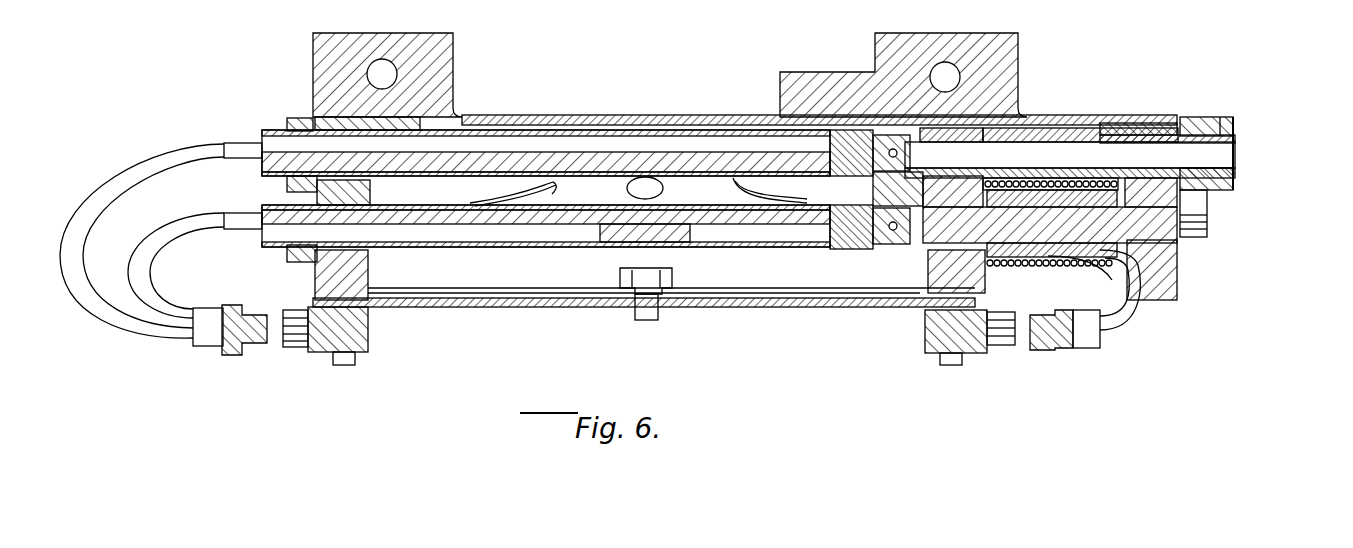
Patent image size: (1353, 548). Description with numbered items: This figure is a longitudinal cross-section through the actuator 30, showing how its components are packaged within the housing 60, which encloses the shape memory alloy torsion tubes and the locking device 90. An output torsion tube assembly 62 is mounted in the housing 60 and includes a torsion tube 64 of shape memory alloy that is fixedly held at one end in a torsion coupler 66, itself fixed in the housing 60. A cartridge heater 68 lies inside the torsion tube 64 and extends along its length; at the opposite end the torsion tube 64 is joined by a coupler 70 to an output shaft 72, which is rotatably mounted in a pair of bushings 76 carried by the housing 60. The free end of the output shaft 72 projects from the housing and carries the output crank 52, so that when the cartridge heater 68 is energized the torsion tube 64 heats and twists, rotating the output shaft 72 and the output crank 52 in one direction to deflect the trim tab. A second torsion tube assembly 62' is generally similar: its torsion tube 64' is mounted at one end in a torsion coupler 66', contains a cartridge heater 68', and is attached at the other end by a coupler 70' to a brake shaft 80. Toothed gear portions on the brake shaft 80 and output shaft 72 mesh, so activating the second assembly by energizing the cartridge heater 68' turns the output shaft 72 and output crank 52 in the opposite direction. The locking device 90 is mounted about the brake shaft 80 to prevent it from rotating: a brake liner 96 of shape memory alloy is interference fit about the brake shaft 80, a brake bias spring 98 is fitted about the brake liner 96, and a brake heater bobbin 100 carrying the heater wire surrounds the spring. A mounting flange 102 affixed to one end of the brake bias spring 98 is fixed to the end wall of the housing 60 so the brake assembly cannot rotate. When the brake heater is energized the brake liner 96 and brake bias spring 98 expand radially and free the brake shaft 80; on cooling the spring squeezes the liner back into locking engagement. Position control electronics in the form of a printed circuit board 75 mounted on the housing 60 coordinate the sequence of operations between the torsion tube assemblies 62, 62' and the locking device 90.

The actuator 30 is at (625, 92).
The output crank 52 is at (1233, 123).
The housing 60 is at (490, 117).
The output torsion tube assembly 62 is at (186, 198).
The second torsion tube assembly 62' is at (222, 284).
The torsion tube 64 is at (546, 120).
The torsion tube 64' is at (546, 247).
The torsion coupler 66 is at (278, 187).
The torsion coupler 66' is at (354, 306).
The cartridge heater 68 is at (638, 136).
The cartridge heater 68' is at (673, 255).
The coupler 70 is at (855, 105).
The coupler 70' is at (844, 247).
The output shaft 72 is at (963, 135).
The printed circuit board 75 is at (487, 307).
The bushings 76 is at (935, 135).
The brake shaft 80 is at (922, 240).
The locking device 90 is at (1018, 172).
The brake liner 96 is at (1023, 243).
The brake bias spring 98 is at (1045, 260).
The brake heater bobbin 100 is at (1100, 178).
The mounting flange 102 is at (1120, 272).